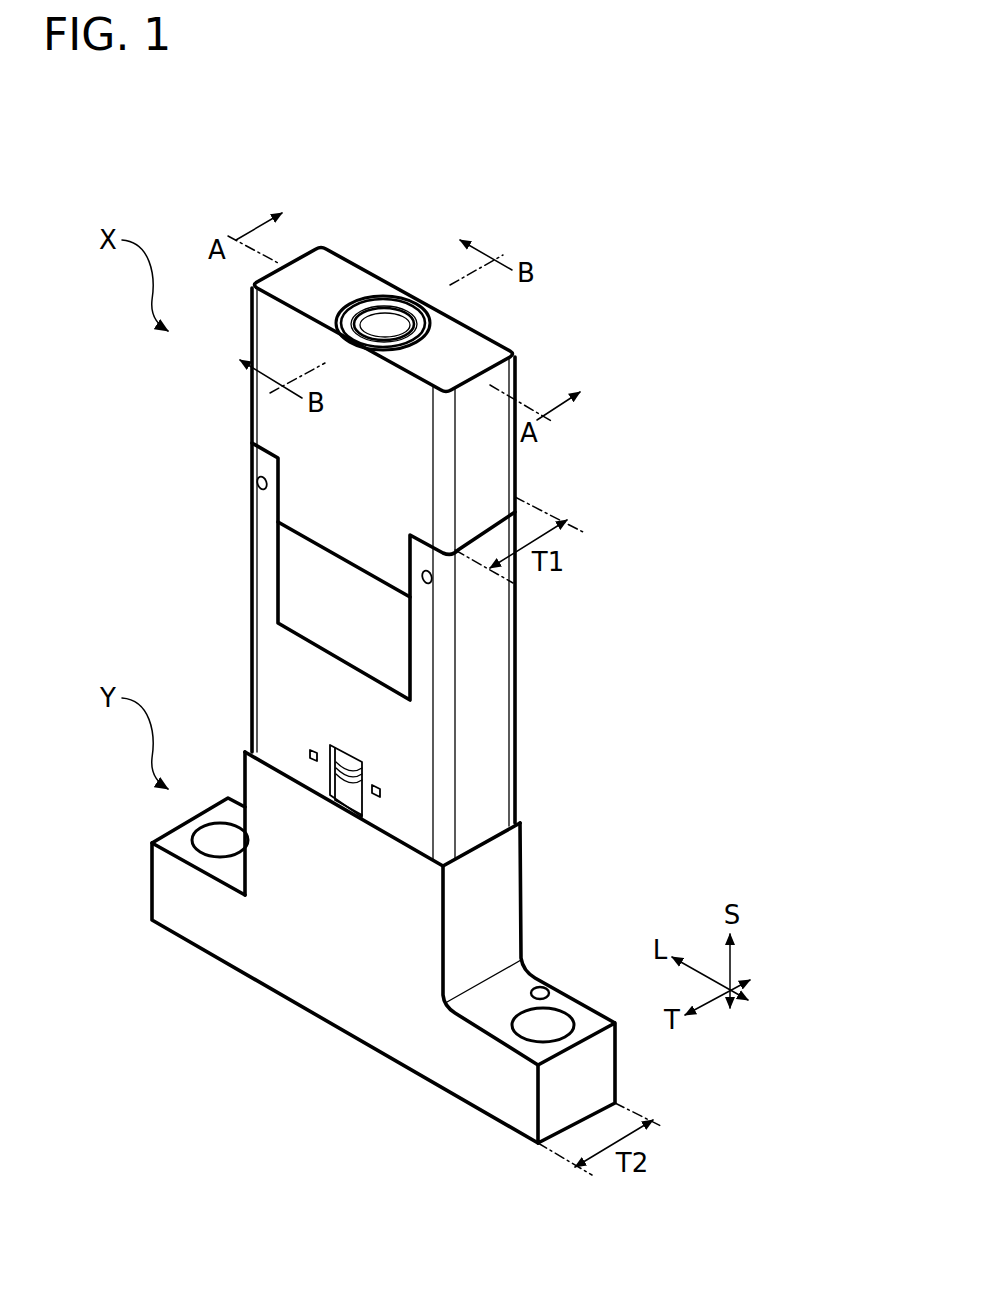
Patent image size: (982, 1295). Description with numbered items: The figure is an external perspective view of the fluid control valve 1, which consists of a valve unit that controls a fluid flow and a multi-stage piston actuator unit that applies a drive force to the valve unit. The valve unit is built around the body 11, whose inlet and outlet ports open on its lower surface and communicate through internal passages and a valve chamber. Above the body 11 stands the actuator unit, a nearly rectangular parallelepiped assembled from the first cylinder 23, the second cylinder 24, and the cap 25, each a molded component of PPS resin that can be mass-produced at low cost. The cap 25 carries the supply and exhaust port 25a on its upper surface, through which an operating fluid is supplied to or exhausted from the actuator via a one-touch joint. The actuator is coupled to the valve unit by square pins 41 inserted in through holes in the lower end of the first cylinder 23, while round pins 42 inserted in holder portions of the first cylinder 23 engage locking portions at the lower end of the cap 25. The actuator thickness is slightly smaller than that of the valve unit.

The fluid control valve 1 is at (169, 133).
The body 11 is at (505, 885).
The first cylinder 23 is at (497, 745).
The second cylinder 24 is at (378, 572).
The cap 25 is at (424, 352).
The supply and exhaust port 25a is at (393, 332).
The square pin 41 is at (307, 755).
The round pin 42 is at (257, 485).